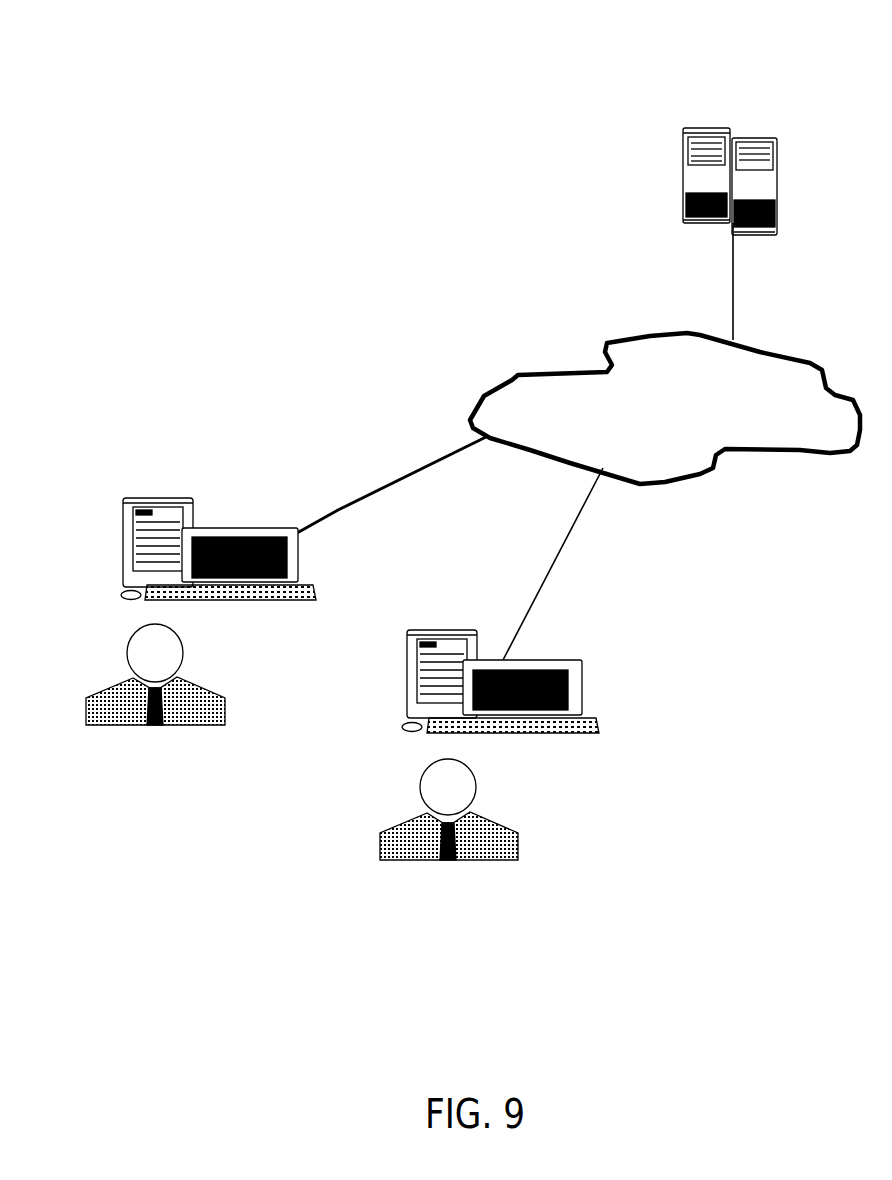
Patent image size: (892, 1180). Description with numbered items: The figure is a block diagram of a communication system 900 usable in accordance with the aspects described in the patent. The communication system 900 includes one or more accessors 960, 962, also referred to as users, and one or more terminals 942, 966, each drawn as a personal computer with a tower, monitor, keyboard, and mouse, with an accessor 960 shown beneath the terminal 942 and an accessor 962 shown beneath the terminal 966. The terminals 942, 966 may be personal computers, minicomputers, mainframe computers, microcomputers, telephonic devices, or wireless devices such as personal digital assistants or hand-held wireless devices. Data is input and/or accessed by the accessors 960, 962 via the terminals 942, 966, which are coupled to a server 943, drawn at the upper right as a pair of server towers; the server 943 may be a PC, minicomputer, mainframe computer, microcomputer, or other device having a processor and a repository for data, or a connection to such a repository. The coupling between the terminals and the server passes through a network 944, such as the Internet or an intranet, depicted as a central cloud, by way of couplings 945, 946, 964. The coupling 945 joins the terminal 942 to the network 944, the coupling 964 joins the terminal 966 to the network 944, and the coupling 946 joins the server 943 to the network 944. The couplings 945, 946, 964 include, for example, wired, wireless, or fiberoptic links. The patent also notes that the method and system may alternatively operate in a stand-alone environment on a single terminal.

The communication system 900 is at (170, 84).
The terminal 942 is at (158, 498).
The server 943 is at (710, 125).
The network 944 is at (532, 375).
The coupling 945 is at (337, 510).
The coupling 946 is at (734, 300).
The accessor 960 is at (118, 682).
The accessor 962 is at (497, 822).
The coupling 964 is at (575, 530).
The terminal 966 is at (580, 660).